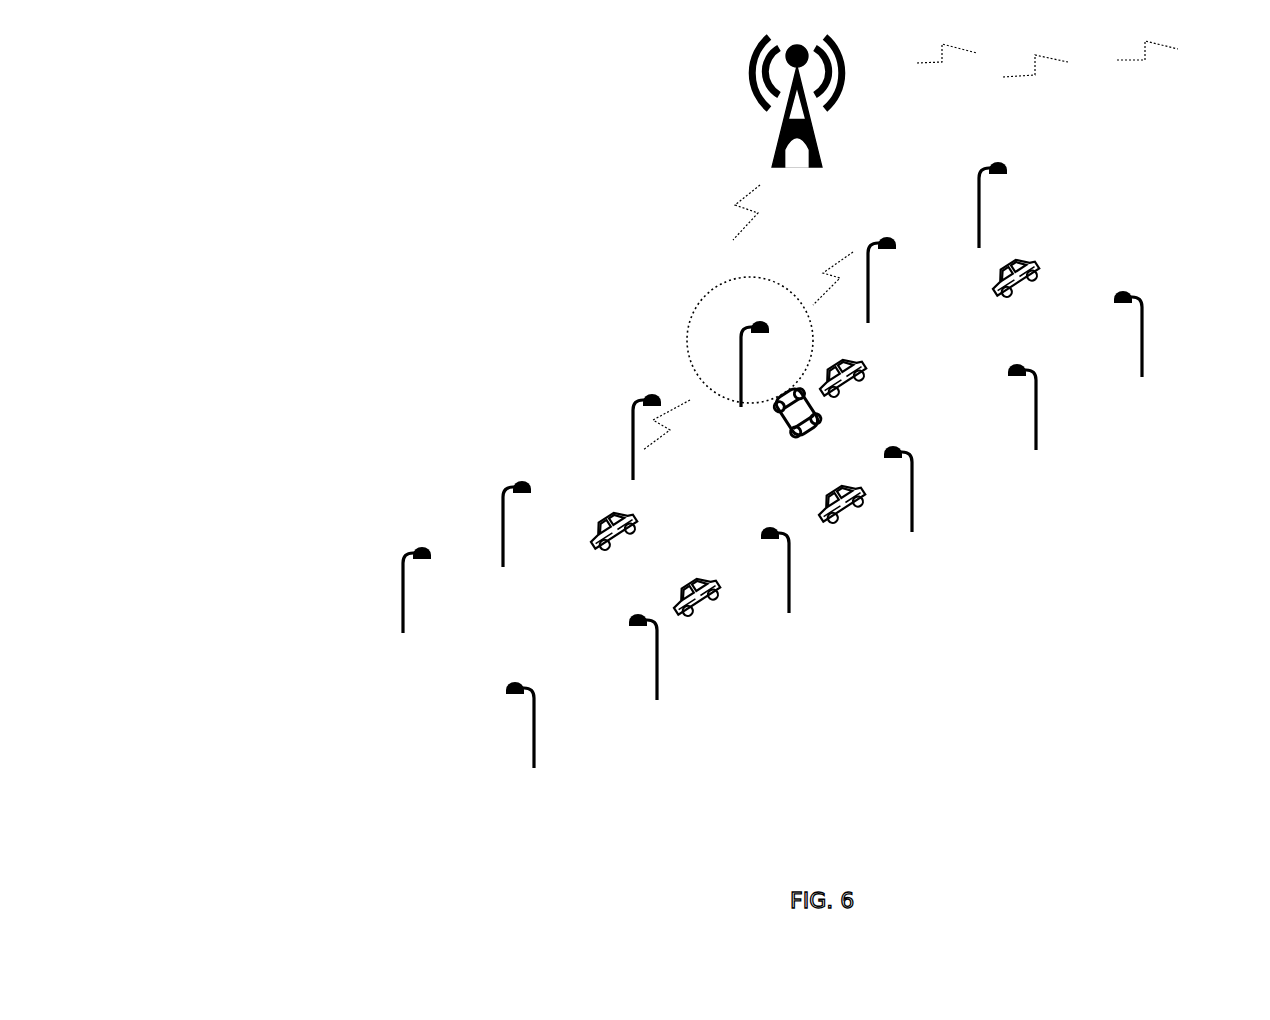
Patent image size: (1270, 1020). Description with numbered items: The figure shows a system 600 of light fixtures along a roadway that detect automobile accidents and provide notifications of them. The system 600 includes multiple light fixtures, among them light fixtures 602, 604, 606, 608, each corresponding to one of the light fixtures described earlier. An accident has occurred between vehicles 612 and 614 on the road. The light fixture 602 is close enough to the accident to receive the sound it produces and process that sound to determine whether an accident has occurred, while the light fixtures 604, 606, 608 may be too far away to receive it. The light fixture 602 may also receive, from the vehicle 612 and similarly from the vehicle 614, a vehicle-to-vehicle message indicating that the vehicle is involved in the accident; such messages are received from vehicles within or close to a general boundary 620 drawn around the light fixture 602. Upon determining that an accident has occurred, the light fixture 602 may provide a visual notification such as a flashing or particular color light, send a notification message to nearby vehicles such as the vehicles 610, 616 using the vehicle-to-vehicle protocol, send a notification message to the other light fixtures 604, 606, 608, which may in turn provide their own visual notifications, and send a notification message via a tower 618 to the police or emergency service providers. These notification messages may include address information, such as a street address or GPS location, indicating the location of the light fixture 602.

The system 600 is at (317, 127).
The light fixture 602 is at (756, 325).
The light fixture 604 is at (645, 392).
The light fixture 606 is at (880, 240).
The light fixture 608 is at (1030, 396).
The vehicle 610 is at (698, 603).
The vehicle 612 is at (795, 440).
The vehicle 614 is at (857, 357).
The vehicle 616 is at (1040, 262).
The tower 618 is at (773, 146).
The general boundary 620 is at (688, 340).